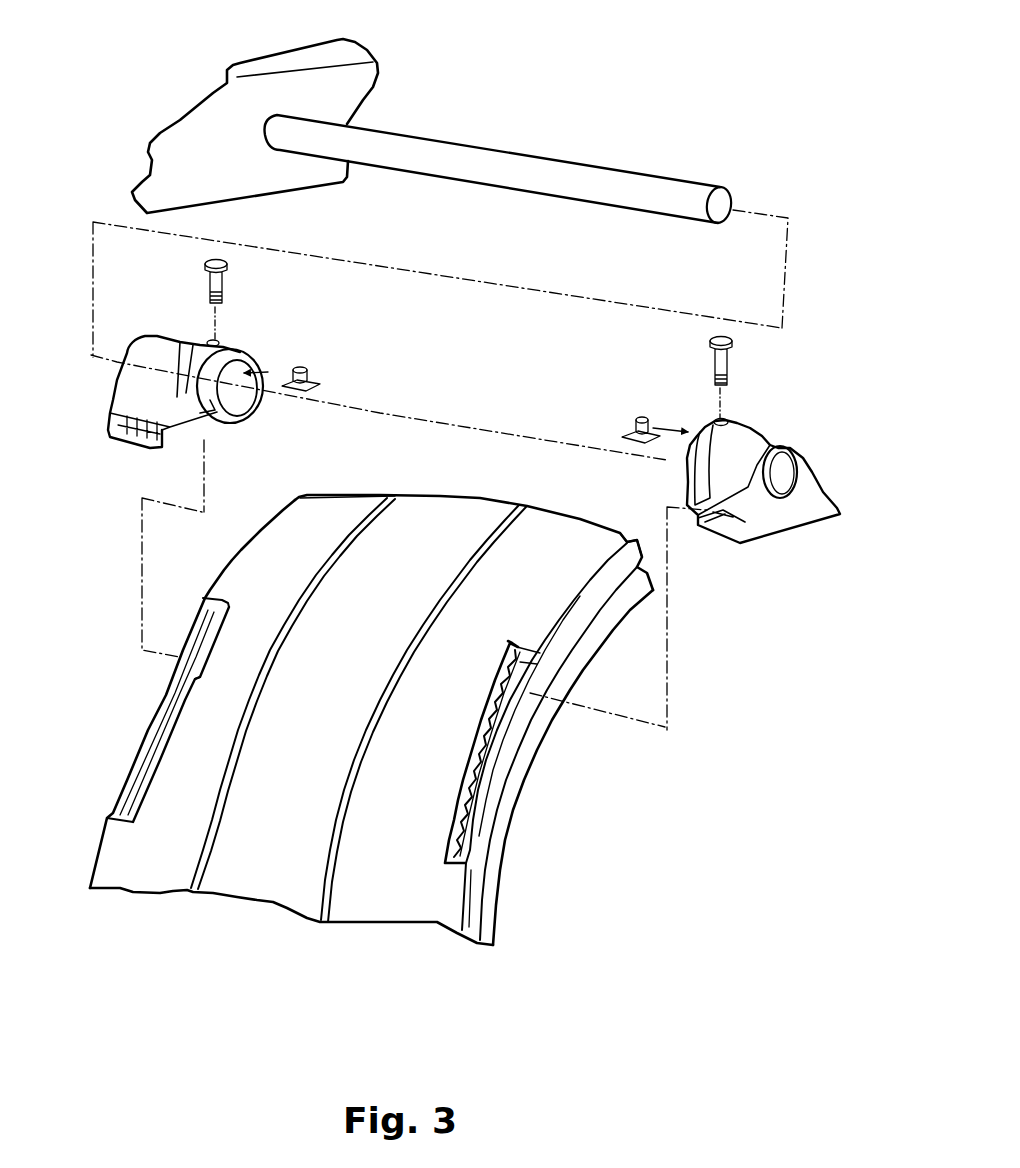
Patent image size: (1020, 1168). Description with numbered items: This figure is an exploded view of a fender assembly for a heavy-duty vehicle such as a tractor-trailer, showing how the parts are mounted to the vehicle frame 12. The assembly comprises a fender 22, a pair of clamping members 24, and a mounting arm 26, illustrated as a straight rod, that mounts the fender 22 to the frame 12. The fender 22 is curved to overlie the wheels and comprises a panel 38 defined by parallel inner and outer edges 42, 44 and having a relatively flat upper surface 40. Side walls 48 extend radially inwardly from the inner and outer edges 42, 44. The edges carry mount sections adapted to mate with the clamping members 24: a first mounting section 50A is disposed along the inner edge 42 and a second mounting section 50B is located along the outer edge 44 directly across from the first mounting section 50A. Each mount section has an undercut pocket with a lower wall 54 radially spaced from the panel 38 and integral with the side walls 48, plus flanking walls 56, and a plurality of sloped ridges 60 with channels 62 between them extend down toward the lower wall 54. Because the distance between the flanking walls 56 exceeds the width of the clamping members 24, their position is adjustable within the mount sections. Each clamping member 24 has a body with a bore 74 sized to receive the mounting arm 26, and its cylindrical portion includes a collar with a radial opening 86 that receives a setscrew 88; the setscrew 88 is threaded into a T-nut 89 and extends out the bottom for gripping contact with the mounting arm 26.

The frame 12 is at (243, 65).
The fender 22 is at (133, 909).
The clamping member 24 is at (108, 413).
The mounting arm 26 is at (622, 190).
The panel 38 is at (283, 909).
The upper surface 40 is at (258, 868).
The inner edge 42 is at (280, 513).
The outer edge 44 is at (620, 553).
The side walls 48 is at (613, 580).
The first mounting section 50A is at (221, 681).
The second mounting section 50B is at (468, 730).
The lower wall 54 is at (170, 680).
The flanking walls 56 is at (205, 600).
The sloped ridges 60 is at (492, 726).
The channels 62 is at (490, 750).
The bore 74 is at (250, 398).
The radial opening 86 is at (218, 342).
The setscrew 88 is at (205, 263).
The T-nut 89 is at (298, 368).